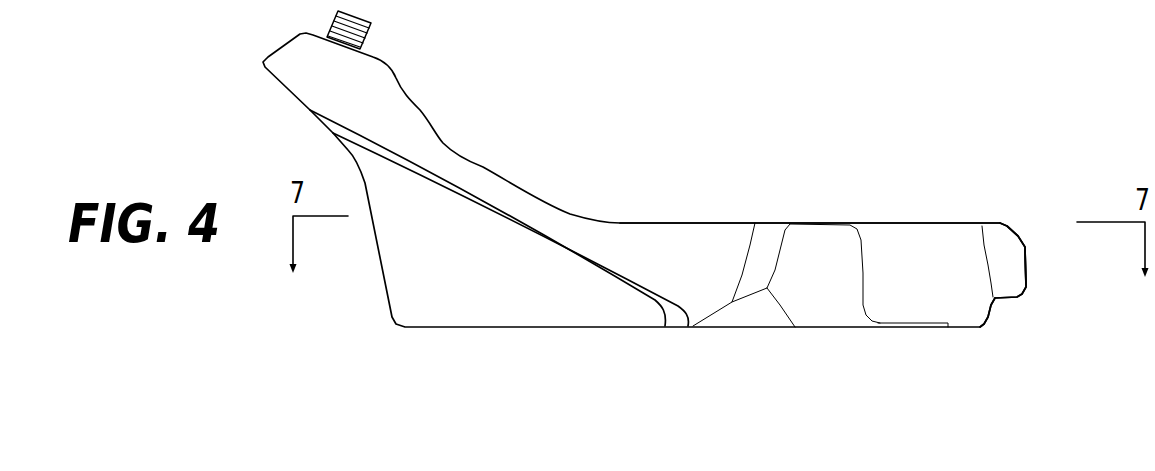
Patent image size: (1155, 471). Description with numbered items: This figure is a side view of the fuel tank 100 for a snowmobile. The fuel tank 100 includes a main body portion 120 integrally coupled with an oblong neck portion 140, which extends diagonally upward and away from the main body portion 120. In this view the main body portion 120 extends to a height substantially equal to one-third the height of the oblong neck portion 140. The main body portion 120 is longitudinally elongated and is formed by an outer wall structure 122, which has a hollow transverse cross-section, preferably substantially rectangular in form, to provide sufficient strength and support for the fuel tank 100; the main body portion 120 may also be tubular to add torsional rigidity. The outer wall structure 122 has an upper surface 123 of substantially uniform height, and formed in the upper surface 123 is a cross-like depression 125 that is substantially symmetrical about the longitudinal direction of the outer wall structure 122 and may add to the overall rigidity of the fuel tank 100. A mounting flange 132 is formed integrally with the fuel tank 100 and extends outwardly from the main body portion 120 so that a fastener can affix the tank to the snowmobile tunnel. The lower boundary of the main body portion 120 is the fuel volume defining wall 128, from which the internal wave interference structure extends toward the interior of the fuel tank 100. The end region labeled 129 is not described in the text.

The fuel tank 100 is at (658, 106).
The oblong neck portion 140 is at (447, 136).
The outer wall structure 122 is at (679, 215).
The cross-like depression 125 is at (755, 223).
The upper surface 123 is at (842, 223).
The main body portion 120 is at (967, 218).
The end face 129 is at (1027, 265).
The fuel volume defining wall 128 is at (992, 315).
The mounting flanges 132 is at (917, 323).